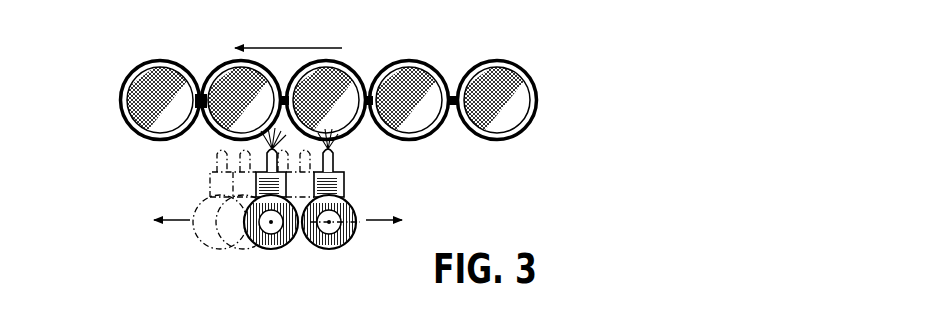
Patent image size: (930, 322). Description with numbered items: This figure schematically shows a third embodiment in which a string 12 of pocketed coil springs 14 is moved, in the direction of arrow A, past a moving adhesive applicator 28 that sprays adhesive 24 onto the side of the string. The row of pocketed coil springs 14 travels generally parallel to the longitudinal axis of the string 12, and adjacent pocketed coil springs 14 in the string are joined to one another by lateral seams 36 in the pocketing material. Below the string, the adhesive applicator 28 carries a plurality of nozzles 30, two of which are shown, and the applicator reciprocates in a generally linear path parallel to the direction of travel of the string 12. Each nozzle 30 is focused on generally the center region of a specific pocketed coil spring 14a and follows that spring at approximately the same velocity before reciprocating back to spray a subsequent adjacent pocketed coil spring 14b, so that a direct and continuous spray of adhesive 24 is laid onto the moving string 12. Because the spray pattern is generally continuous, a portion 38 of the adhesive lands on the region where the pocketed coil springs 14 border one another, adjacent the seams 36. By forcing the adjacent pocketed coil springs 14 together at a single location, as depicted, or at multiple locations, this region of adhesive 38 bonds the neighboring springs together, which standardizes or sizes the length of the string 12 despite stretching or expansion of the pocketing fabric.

The string 12 is at (355, 101).
The pocketed coil spring 14 is at (170, 62).
The pocketed coil spring 14a is at (340, 62).
The pocketed coil spring 14b is at (438, 133).
The lateral seam 36 is at (368, 92).
The portion of adhesive 38 is at (201, 128).
The arrow A is at (305, 48).
The nozzle 30 is at (212, 169).
The adhesive 24 is at (226, 160).
The adhesive applicator 28 is at (318, 259).